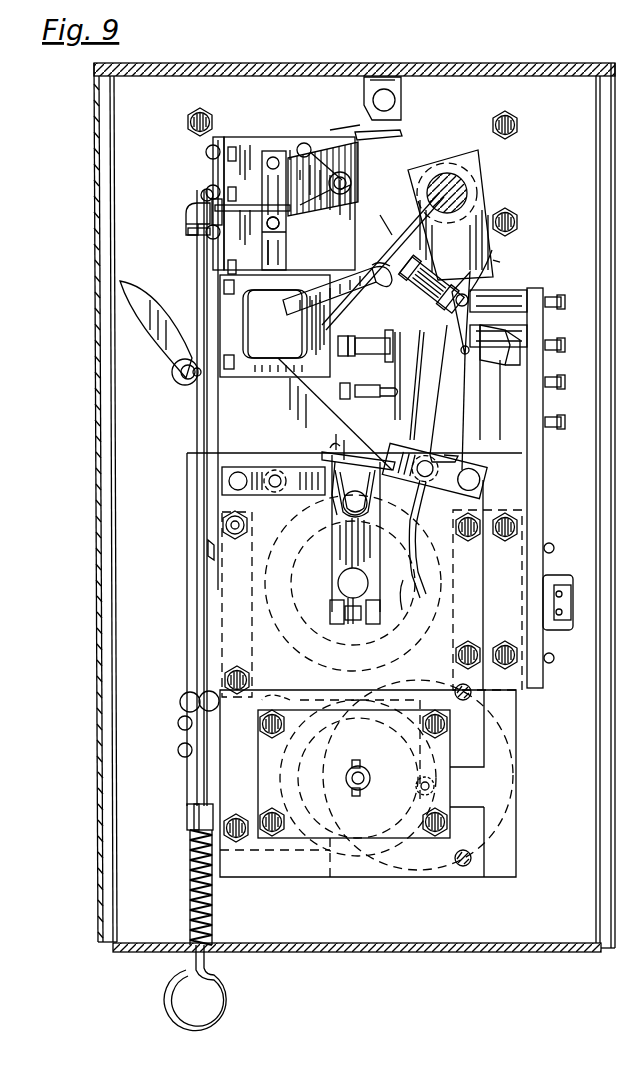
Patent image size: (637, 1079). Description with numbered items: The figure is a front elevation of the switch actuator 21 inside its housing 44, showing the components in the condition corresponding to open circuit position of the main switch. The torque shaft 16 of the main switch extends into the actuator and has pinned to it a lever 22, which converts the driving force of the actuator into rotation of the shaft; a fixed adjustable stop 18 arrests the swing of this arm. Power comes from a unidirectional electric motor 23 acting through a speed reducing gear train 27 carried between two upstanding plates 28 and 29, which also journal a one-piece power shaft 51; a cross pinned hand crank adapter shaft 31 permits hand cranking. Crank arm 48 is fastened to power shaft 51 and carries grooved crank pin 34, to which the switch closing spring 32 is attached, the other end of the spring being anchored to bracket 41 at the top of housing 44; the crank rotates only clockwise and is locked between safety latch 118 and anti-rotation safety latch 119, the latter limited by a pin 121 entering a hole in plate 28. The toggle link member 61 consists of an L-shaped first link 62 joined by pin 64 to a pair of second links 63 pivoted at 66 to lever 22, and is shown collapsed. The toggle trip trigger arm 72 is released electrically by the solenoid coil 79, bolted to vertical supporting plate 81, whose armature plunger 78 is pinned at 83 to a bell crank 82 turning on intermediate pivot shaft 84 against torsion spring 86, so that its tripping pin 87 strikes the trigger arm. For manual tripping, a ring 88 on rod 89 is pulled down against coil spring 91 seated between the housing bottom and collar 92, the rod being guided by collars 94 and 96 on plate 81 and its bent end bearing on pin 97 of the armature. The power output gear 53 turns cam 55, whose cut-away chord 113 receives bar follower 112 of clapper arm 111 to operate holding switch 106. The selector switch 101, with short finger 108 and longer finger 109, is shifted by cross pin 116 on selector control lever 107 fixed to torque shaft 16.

The torque shaft 16 is at (447, 183).
The fixed adjustable stop 18 is at (455, 328).
The switch actuator 21 is at (90, 466).
The lever 22 is at (432, 269).
The electric motor 23 is at (500, 738).
The speed reducing gear train 27 is at (278, 660).
The vertical plate 28 is at (232, 632).
The vertical plate 29 is at (212, 656).
The hand crank adapter shaft 31 is at (366, 788).
The switch closing spring 32 is at (404, 132).
The crank pin 34 is at (345, 508).
The bracket 41 is at (396, 96).
The housing 44 is at (320, 60).
The crank arm 48 is at (370, 509).
The power shaft 51 is at (338, 581).
The power output gear 53 is at (262, 603).
The auxiliary switch controlling cam 55 is at (285, 558).
The toggle link member 61 is at (186, 390).
The first link 62 is at (274, 400).
The second link 63 is at (350, 302).
The pin 64 is at (182, 376).
The pivot connection 66 is at (382, 266).
The toggle trip trigger arm 72 is at (332, 276).
The armature plunger 78 is at (281, 248).
The solenoid coil 79 is at (275, 326).
The vertical supporting plate 81 is at (213, 170).
The bell crank 82 is at (300, 158).
The pivot pin 83 is at (273, 158).
The intermediate pivot shaft 84 is at (350, 188).
The torsion spring 86 is at (308, 144).
The tripping pin 87 is at (360, 166).
The ring 88 is at (207, 1028).
The manual trip release rod 89 is at (197, 546).
The coil spring 91 is at (190, 875).
The collar 92 is at (187, 816).
The collar 94 is at (226, 225).
The collar 96 is at (186, 231).
The pin 97 is at (279, 224).
The selector switch 101 is at (522, 286).
The holding switch 106 is at (400, 336).
The selector control lever 107 is at (480, 233).
The contact finger 108 is at (486, 314).
The contact finger 109 is at (448, 326).
The holding switch clapper arm 111 is at (418, 383).
The bar follower 112 is at (418, 416).
The cut-away chord 113 is at (414, 556).
The cross pin 116 is at (492, 262).
The safety latch 118 is at (446, 480).
The anti-rotation safety latch 119 is at (246, 468).
The pin 121 is at (274, 489).